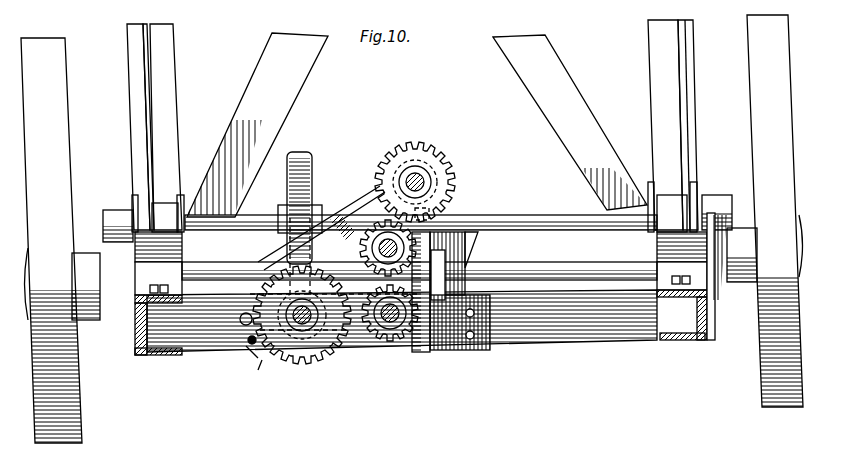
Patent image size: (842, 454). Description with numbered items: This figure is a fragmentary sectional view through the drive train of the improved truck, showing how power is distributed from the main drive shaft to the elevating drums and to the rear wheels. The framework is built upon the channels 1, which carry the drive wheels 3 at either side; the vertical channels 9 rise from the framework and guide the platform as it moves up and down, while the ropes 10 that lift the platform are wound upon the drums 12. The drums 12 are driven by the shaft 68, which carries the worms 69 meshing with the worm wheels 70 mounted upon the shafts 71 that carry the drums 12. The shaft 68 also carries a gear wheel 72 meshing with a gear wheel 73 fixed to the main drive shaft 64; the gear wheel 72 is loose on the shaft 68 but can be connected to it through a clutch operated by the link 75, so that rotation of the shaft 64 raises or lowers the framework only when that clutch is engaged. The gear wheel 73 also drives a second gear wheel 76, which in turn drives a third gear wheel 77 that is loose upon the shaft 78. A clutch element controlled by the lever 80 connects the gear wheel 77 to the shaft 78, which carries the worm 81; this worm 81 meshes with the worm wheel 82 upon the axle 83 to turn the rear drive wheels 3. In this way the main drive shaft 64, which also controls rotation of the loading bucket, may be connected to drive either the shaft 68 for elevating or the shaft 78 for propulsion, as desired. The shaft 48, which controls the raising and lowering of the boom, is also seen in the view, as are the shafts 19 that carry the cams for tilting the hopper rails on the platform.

The channel 1 is at (152, 357).
The drive wheel 3 is at (78, 393).
The vertical channel 9 is at (130, 97).
The rope 10 is at (143, 67).
The drum 12 is at (165, 215).
The shaft 19 is at (425, 160).
The shaft 48 is at (243, 323).
The main drive shaft 64 is at (393, 320).
The shaft 68 is at (304, 324).
The worm 69 is at (259, 372).
The worm wheel 70 is at (297, 155).
The shaft 71 is at (503, 218).
The gear wheel 72 is at (330, 361).
The gear wheel 73 is at (385, 338).
The link 75 is at (250, 344).
The second gear wheel 76 is at (365, 228).
The third gear wheel 77 is at (450, 168).
The shaft 78 is at (412, 178).
The lever 80 is at (378, 200).
The worm 81 is at (452, 182).
The worm wheel 82 is at (423, 352).
The axle 83 is at (575, 266).